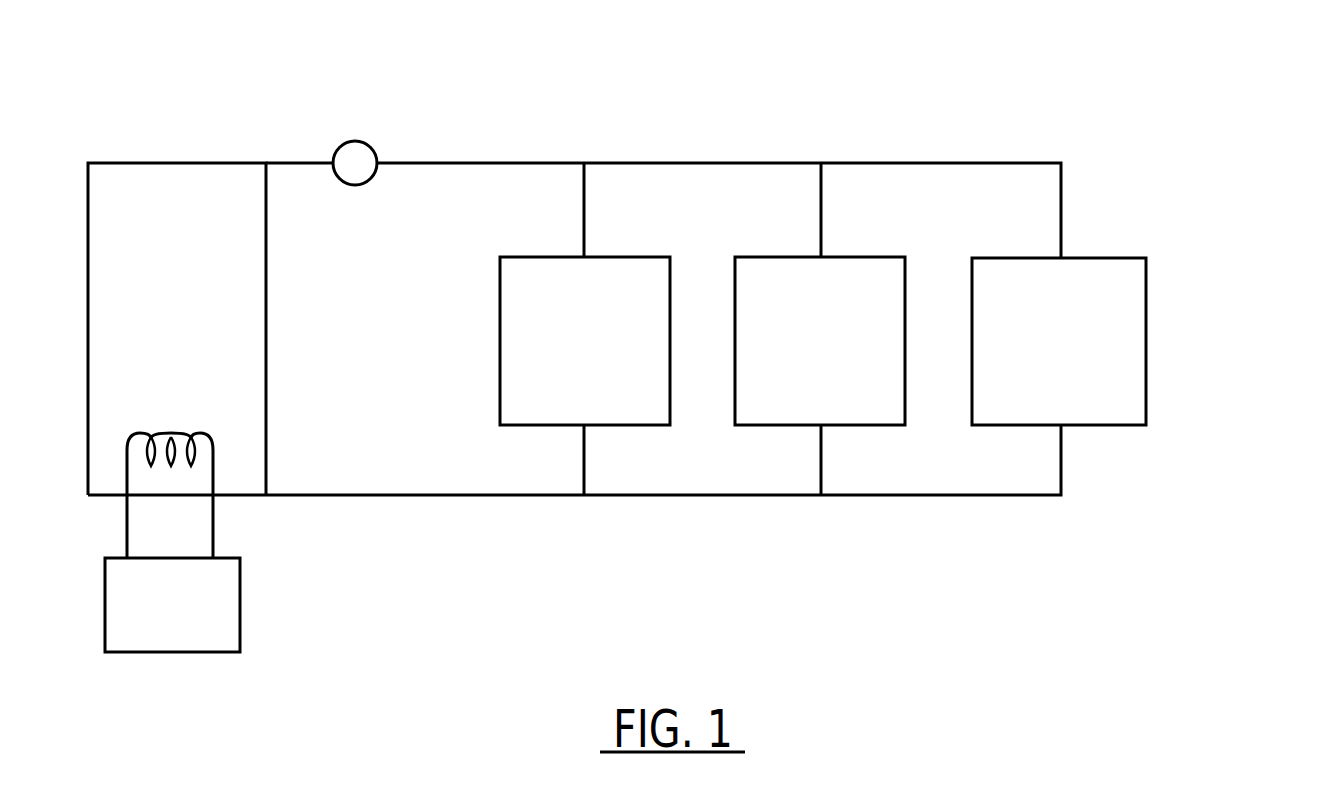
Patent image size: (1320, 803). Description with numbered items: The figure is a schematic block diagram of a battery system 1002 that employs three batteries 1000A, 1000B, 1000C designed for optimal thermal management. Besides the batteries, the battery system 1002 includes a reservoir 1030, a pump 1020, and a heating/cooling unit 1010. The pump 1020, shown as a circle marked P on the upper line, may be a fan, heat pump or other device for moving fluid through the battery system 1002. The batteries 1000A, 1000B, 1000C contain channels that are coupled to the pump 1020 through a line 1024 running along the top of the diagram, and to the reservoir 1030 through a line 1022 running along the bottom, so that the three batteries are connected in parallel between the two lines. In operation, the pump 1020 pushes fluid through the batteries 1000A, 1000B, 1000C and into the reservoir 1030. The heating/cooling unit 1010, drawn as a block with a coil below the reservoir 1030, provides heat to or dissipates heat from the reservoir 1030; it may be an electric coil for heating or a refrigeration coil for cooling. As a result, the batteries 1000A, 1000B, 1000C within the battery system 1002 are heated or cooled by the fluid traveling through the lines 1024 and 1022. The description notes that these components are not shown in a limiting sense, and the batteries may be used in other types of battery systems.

The battery system 1002 is at (1150, 50).
The reservoir 1030 is at (138, 163).
The pump 1020 is at (369, 150).
The line 1024 is at (637, 163).
The line 1022 is at (472, 495).
The battery 1000A is at (1146, 338).
The battery 1000B is at (783, 425).
The battery 1000C is at (500, 332).
The heating/cooling unit 1010 is at (240, 618).